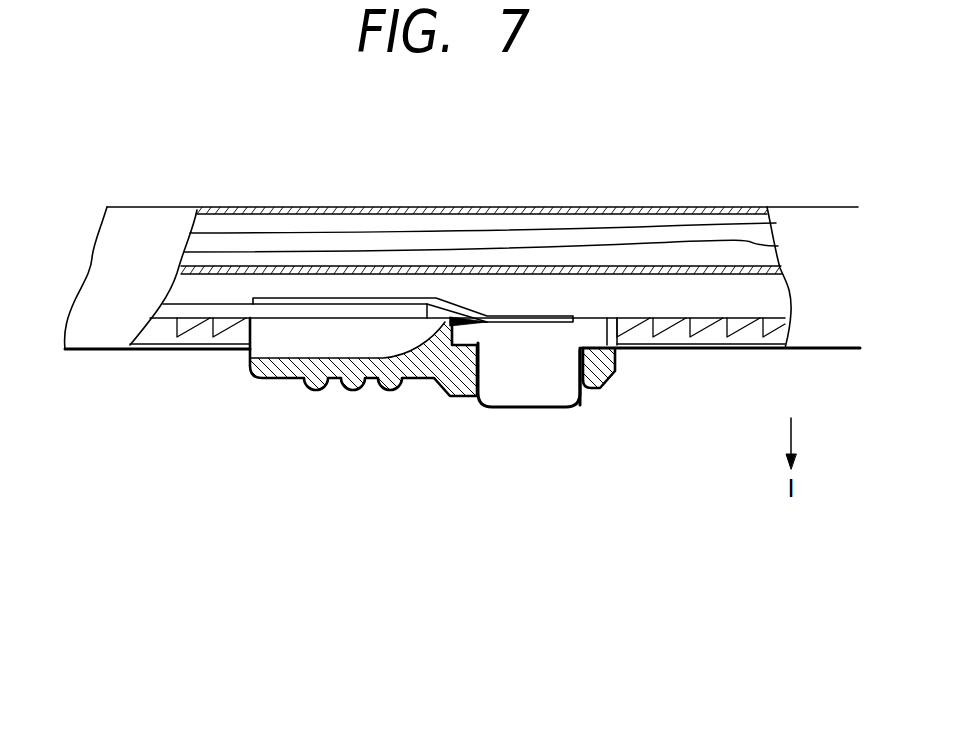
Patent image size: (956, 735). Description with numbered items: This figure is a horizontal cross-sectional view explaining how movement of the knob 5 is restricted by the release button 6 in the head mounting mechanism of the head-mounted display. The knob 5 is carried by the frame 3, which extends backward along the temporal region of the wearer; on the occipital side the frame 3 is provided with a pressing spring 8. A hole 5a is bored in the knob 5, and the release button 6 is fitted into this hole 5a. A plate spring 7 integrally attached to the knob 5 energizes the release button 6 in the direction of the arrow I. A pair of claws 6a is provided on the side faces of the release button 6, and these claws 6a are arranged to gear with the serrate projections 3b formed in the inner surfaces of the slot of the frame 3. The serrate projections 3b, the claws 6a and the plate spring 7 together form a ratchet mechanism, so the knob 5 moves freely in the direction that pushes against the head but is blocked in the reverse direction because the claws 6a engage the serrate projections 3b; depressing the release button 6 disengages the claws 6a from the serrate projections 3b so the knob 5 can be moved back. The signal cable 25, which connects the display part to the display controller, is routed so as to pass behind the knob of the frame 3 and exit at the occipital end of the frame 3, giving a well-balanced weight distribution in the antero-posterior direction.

The frame 3 is at (808, 225).
The signal cable 25 is at (667, 230).
The pressing spring 8 is at (168, 310).
The serrate projections 3b is at (637, 332).
The plate spring 7 is at (463, 307).
The knob 5 is at (298, 343).
The release button 6 is at (497, 387).
The claws 6a is at (550, 322).
The hole 5a is at (573, 407).